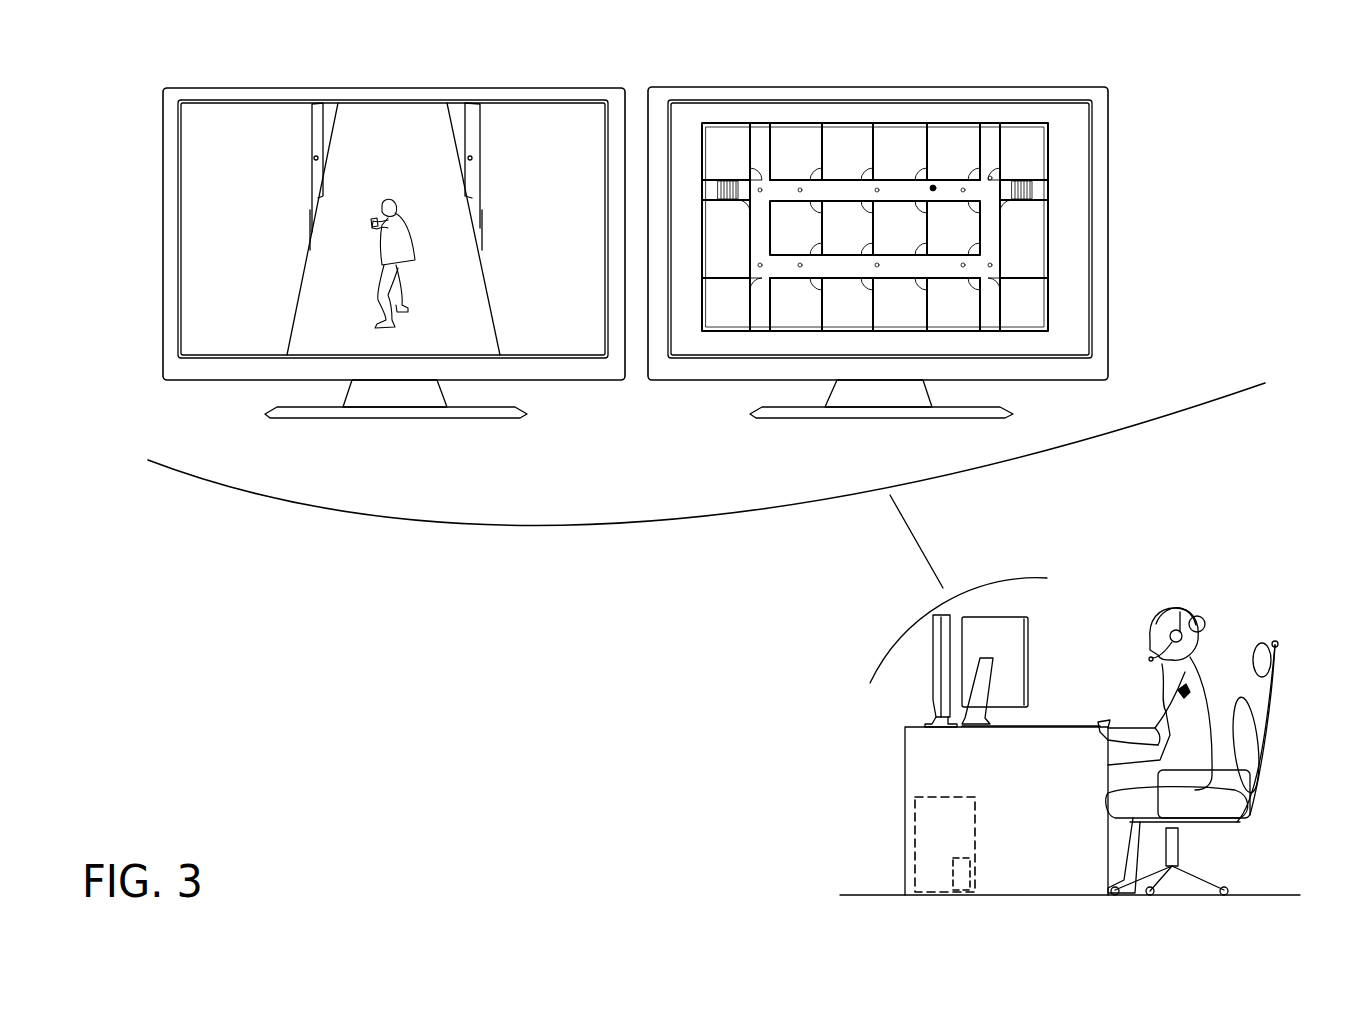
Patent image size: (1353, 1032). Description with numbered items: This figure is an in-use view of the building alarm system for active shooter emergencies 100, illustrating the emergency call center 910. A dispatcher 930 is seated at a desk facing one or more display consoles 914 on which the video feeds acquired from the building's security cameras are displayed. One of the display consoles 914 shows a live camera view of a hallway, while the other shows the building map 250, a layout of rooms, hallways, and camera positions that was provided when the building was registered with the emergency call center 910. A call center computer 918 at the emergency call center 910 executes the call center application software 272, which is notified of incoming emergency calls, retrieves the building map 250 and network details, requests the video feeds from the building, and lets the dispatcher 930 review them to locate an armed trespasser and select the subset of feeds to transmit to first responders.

The building alarm system for active shooter emergencies 100 is at (1203, 228).
The display consoles 914 is at (583, 87).
The building map 250 is at (855, 123).
The emergency call center 910 is at (1113, 467).
The call center computer 918 is at (915, 843).
The call center application software 272 is at (965, 880).
The dispatcher 930 is at (1197, 737).